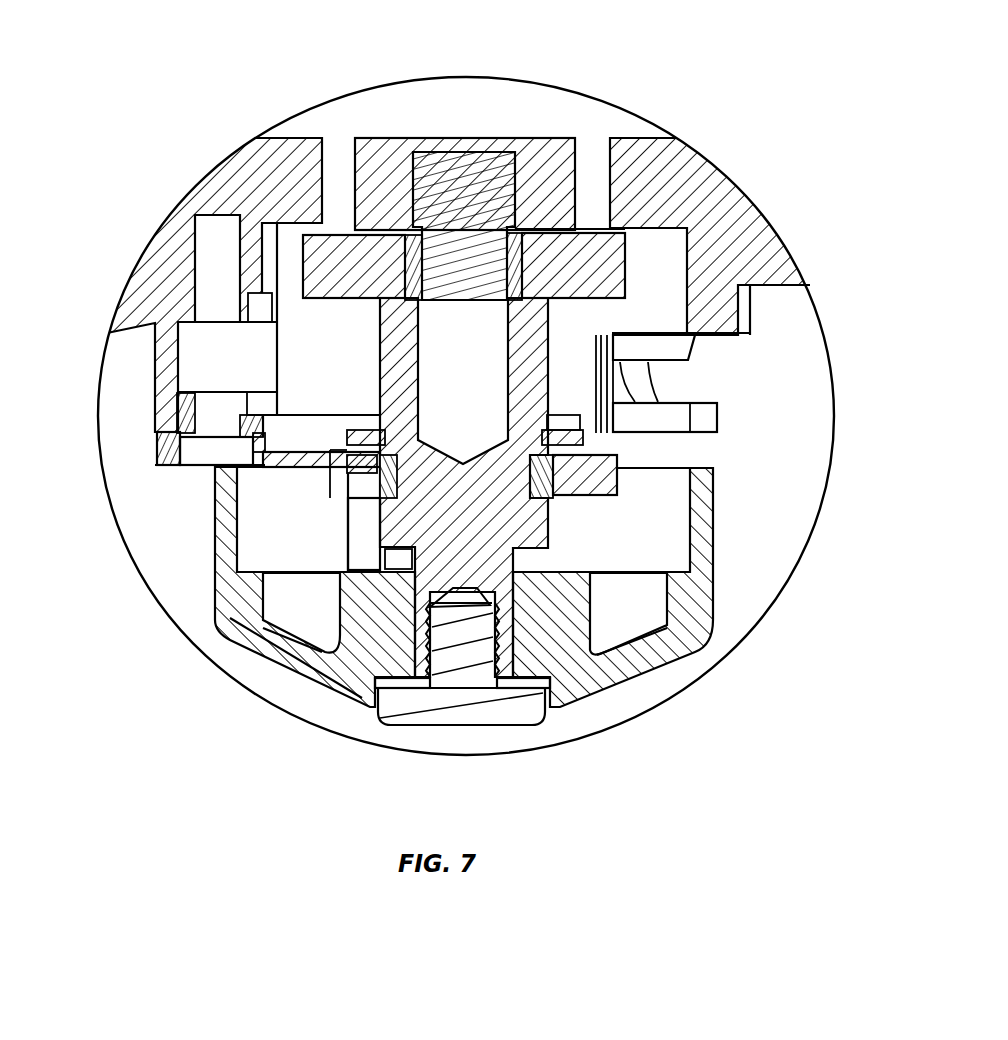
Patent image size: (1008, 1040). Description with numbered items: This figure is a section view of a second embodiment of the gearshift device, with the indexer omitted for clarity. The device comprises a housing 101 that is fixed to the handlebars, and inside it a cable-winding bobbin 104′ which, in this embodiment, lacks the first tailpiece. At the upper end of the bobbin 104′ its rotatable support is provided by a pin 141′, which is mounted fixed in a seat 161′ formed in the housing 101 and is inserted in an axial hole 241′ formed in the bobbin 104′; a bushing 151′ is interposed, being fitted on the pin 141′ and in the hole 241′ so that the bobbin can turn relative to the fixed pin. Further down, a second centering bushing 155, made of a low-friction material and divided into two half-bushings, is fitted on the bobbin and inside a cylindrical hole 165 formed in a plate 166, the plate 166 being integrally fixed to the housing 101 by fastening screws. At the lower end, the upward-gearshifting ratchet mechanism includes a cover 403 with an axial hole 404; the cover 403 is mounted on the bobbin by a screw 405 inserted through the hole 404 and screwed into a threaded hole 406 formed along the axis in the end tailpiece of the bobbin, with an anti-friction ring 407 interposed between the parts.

The housing 101 is at (690, 148).
The seat 161′ is at (423, 177).
The pin 141′ is at (476, 165).
The bushing 151′ is at (503, 253).
The cable-winding bobbin 104′ is at (587, 222).
The axial hole 241′ is at (500, 327).
The second centering bushing 155 is at (552, 492).
The plate 166 is at (165, 448).
The cylindrical hole 165 is at (375, 485).
The cover 403 is at (225, 598).
The axial hole 404 is at (387, 710).
The threaded hole 406 is at (440, 612).
The screw 405 is at (503, 713).
The anti-friction ring 407 is at (518, 685).